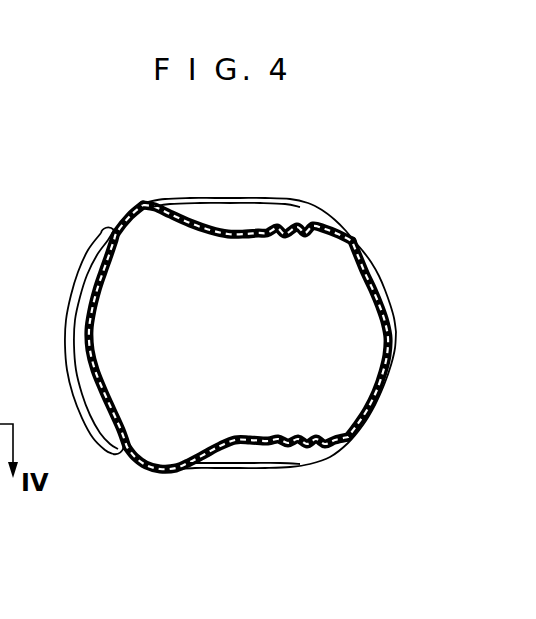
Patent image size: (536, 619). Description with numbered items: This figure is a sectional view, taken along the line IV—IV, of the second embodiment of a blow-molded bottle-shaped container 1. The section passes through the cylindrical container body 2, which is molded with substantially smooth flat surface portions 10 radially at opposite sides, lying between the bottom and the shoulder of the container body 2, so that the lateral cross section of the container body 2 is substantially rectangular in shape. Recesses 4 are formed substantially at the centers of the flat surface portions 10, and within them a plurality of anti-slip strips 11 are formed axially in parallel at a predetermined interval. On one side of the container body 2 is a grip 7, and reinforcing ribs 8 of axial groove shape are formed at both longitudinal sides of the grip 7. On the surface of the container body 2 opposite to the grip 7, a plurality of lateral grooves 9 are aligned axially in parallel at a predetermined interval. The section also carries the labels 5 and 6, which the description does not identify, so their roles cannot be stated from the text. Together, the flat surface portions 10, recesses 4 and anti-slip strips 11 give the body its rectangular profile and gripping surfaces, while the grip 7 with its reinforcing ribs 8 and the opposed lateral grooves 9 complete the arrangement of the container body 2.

The bottle-shaped container 1 is at (98, 437).
The container body 2 is at (88, 371).
The recesses 4 is at (268, 449).
The bottom bead 5 is at (238, 444).
The bottom inner wall 6 is at (212, 450).
The grip 7 is at (389, 335).
The reinforcing ribs 8 is at (362, 281).
The lateral grooves 9 is at (78, 296).
The flat surface portions 10 is at (247, 202).
The anti-slip strips 11 is at (294, 222).